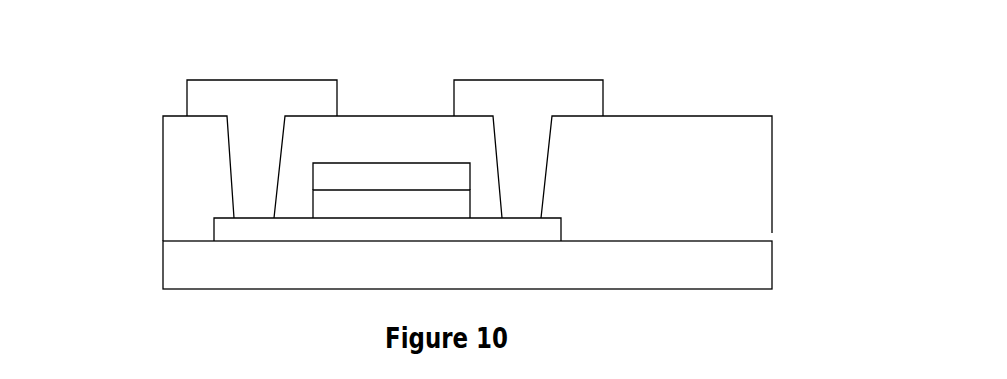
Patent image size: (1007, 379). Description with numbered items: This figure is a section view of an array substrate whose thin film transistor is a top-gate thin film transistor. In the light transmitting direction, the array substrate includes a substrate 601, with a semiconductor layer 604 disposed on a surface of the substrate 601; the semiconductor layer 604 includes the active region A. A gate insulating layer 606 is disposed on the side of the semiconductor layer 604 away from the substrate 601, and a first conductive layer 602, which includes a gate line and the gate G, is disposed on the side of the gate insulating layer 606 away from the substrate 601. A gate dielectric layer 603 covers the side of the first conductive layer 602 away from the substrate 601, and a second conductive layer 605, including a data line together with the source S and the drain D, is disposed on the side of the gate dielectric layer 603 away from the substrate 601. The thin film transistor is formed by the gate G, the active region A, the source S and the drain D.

The substrate 601 is at (773, 269).
The first conductive layer 602 is at (313, 177).
The gate dielectric layer 603 is at (773, 210).
The semiconductor layer 604 is at (214, 232).
The second conductive layer 605 is at (187, 101).
The gate insulating layer 606 is at (313, 207).